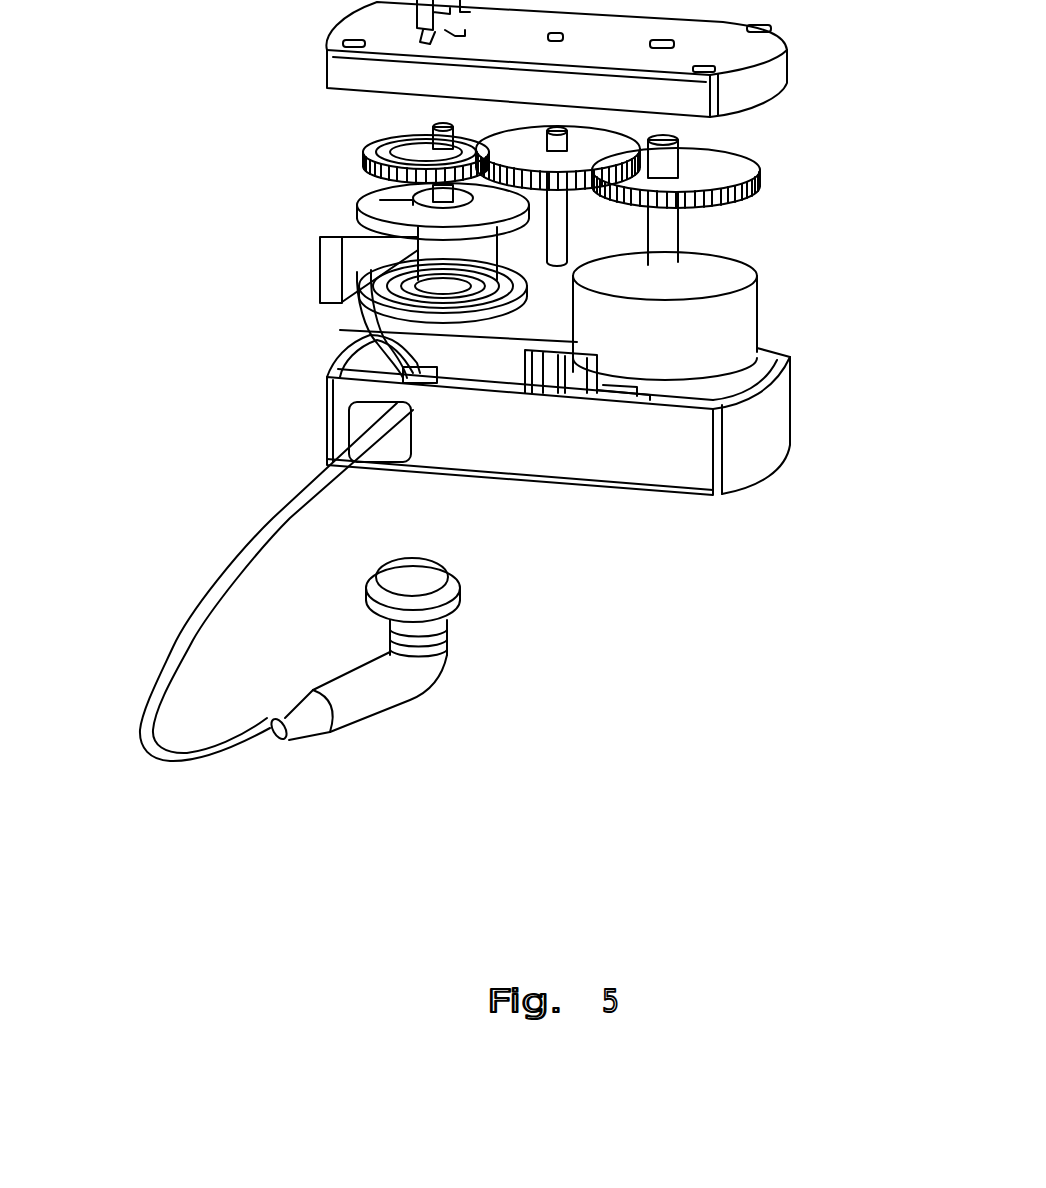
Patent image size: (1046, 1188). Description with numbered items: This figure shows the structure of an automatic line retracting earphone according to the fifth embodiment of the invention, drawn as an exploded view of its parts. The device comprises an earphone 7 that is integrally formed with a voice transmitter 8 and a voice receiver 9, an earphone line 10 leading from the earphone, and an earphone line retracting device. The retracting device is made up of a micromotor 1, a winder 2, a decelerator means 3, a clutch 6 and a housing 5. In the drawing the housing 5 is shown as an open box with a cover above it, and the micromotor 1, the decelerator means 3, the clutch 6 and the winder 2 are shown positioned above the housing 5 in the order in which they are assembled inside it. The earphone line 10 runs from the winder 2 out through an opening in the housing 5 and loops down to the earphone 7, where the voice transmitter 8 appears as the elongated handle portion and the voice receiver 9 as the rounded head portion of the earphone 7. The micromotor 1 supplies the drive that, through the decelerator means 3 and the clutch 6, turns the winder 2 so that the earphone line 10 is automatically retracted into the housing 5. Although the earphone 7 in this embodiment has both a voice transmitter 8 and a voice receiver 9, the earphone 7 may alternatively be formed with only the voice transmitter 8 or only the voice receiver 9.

The micromotor 1 is at (758, 320).
The winder 2 is at (320, 302).
The decelerator means 3 is at (760, 173).
The housing 5 is at (693, 473).
The clutch 6 is at (357, 200).
The earphone 7 is at (440, 657).
The voice transmitter 8 is at (340, 680).
The voice receiver 9 is at (413, 580).
The earphone line 10 is at (317, 485).